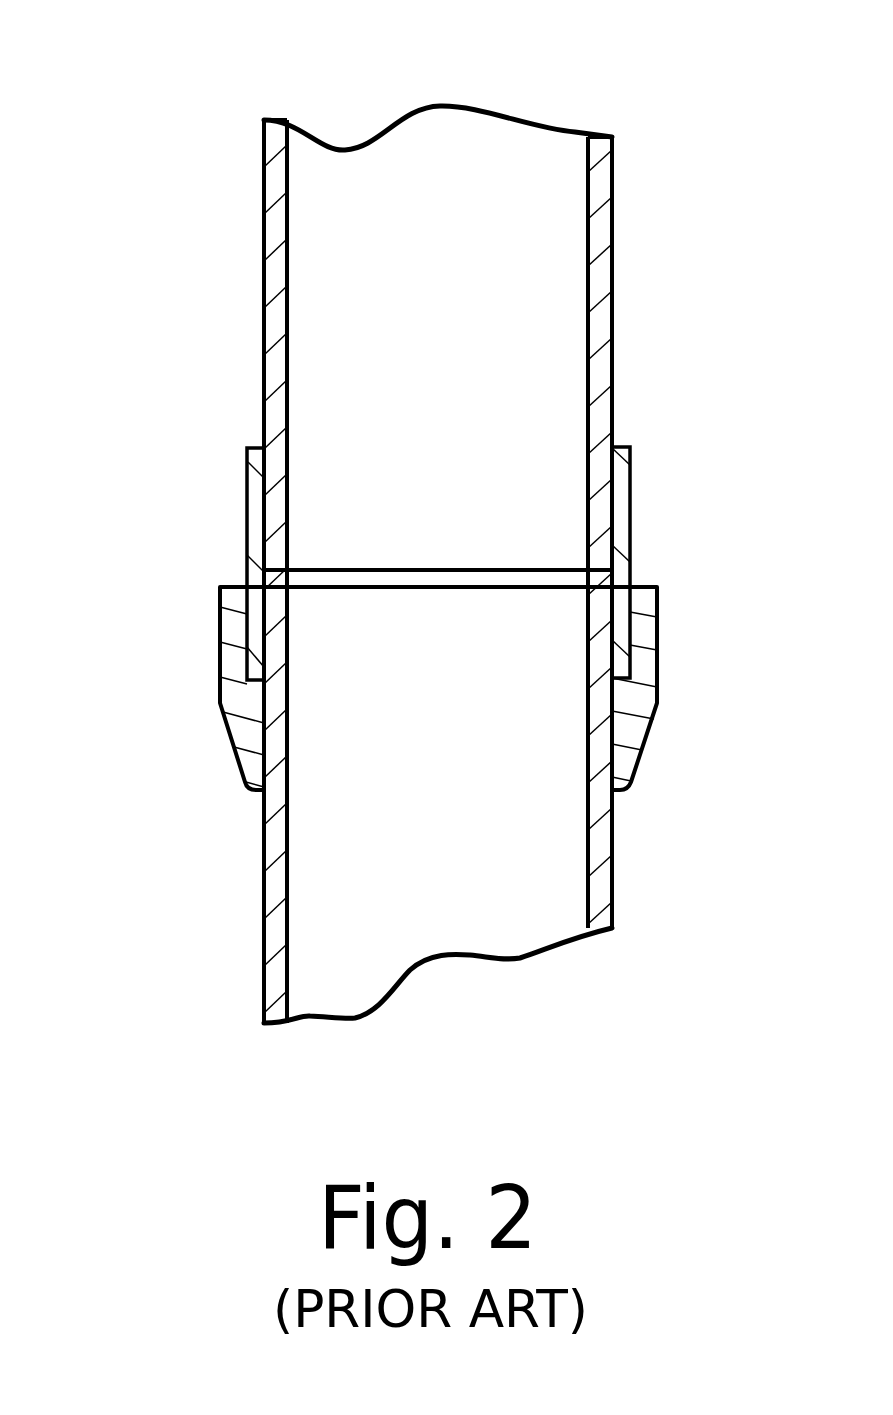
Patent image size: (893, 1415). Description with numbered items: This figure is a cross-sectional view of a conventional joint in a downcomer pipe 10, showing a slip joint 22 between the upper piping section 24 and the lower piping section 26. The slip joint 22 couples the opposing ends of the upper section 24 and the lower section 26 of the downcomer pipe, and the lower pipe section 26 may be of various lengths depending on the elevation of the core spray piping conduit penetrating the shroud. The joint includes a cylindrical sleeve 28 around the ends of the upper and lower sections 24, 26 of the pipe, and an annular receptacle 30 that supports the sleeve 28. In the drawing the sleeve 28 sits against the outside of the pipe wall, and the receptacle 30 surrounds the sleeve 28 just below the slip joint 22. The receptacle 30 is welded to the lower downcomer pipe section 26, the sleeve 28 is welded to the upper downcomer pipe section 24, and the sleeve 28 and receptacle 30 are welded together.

The tubular assembly 10 is at (447, 160).
The slip joint 22 is at (425, 577).
The upper piping section 24 is at (270, 142).
The lower piping section 26 is at (275, 895).
The cylindrical sleeve 28 is at (254, 512).
The annular receptacle 30 is at (645, 703).